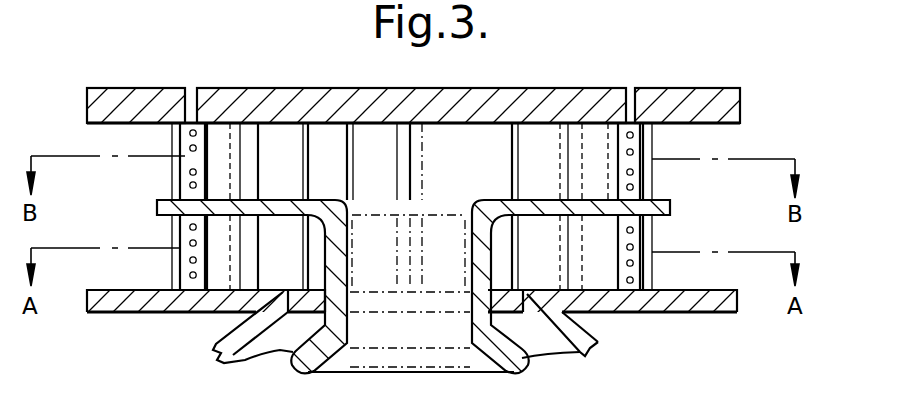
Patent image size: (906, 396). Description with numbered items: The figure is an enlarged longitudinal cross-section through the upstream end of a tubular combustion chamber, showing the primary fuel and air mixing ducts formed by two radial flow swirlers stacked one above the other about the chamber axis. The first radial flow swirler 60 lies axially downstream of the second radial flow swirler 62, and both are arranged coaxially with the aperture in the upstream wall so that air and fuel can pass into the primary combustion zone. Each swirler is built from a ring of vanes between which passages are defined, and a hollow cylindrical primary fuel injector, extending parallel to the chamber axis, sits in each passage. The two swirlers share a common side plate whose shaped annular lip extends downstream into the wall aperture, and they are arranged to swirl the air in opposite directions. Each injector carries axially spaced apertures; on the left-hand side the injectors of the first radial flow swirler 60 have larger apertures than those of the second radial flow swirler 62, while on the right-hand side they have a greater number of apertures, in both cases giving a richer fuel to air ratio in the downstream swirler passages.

The first radial flow swirler 60 is at (653, 275).
The second radial flow swirler 62 is at (692, 148).